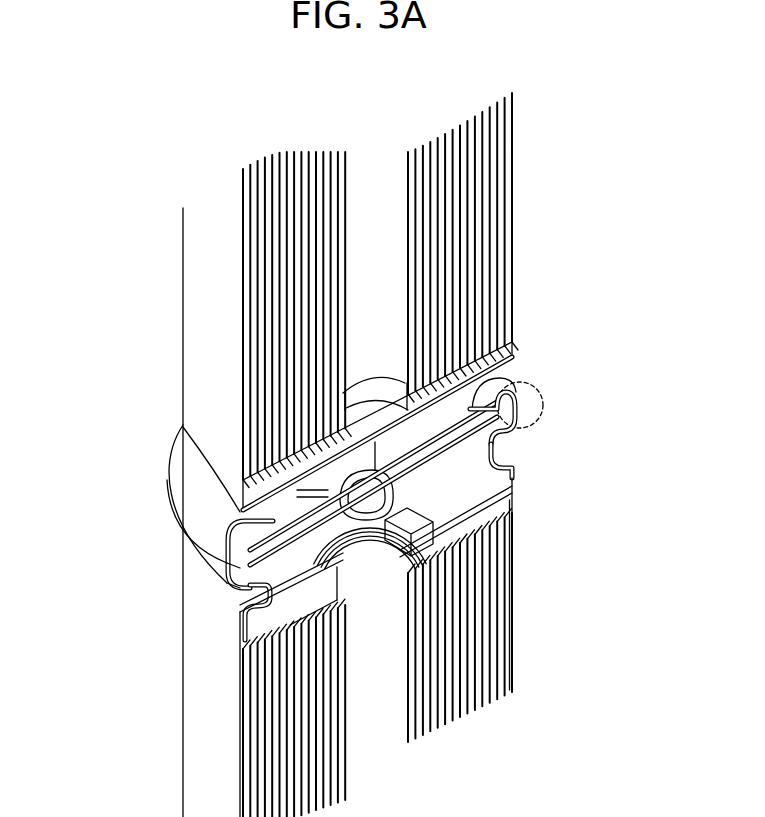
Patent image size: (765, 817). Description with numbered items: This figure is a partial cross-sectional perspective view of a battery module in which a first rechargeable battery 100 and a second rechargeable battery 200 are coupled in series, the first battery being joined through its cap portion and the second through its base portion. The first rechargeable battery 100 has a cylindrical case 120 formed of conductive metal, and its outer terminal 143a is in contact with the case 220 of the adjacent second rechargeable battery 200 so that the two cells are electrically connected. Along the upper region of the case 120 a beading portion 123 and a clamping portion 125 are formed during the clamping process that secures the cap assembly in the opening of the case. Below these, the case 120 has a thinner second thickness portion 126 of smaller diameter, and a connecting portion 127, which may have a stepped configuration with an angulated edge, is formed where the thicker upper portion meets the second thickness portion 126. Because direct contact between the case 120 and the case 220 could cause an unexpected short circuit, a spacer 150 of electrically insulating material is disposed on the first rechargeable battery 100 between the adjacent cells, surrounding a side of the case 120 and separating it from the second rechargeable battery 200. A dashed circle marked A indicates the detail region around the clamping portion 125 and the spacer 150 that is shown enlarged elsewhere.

The first rechargeable battery 100 is at (585, 690).
The case 120 is at (525, 572).
The beading portion 123 is at (490, 452).
The clamping portion 125 is at (500, 400).
The second thickness portion 126 is at (512, 628).
The connecting portion 127 is at (500, 421).
The outer terminal 143a is at (260, 517).
The spacer 150 is at (532, 378).
The second rechargeable battery 200 is at (548, 187).
The case 220 is at (520, 266).
The detail region A is at (545, 392).